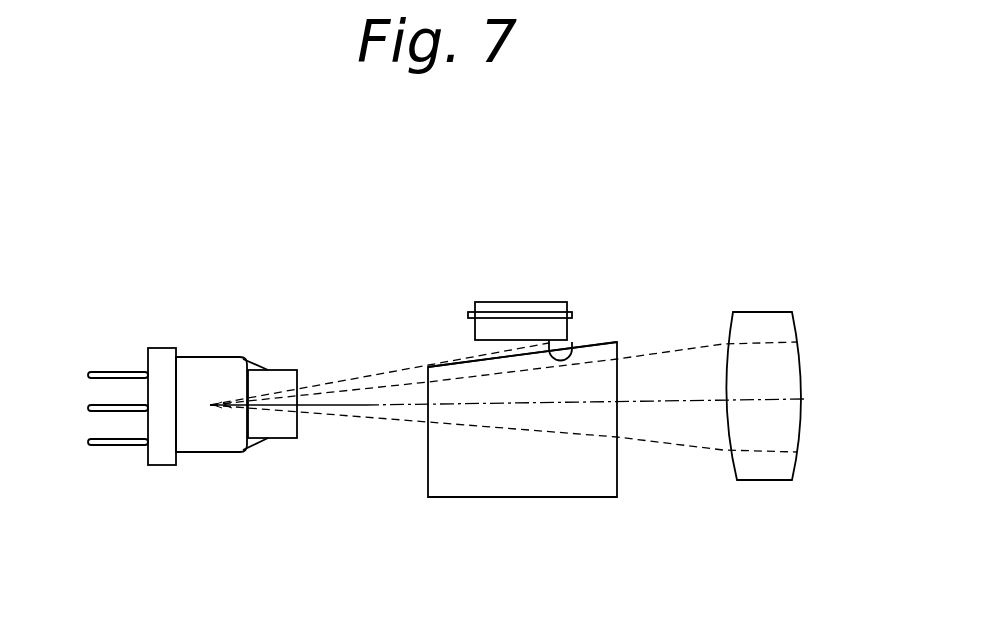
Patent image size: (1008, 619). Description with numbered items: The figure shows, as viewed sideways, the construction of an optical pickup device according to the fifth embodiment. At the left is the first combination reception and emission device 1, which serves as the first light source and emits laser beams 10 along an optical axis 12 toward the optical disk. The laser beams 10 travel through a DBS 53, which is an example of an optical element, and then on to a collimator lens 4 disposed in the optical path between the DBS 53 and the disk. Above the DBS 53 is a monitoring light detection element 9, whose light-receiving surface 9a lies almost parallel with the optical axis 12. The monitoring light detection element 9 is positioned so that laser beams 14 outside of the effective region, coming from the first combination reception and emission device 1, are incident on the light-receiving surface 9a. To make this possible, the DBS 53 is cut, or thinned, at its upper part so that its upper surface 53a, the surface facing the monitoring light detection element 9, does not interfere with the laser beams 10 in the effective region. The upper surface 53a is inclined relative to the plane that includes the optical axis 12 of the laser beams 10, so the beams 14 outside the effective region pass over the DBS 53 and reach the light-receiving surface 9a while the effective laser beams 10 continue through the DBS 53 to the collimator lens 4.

The first combination reception and emission device 1 is at (198, 455).
The collimator lens 4 is at (760, 312).
The monitoring light detection element 9 is at (536, 302).
The light-receiving surface 9a is at (575, 352).
The laser beams 10 is at (393, 421).
The optical axis 12 is at (320, 403).
The laser beams outside of the effective region 14 is at (398, 366).
The DBS 53 is at (498, 497).
The upper surface 53a is at (602, 344).